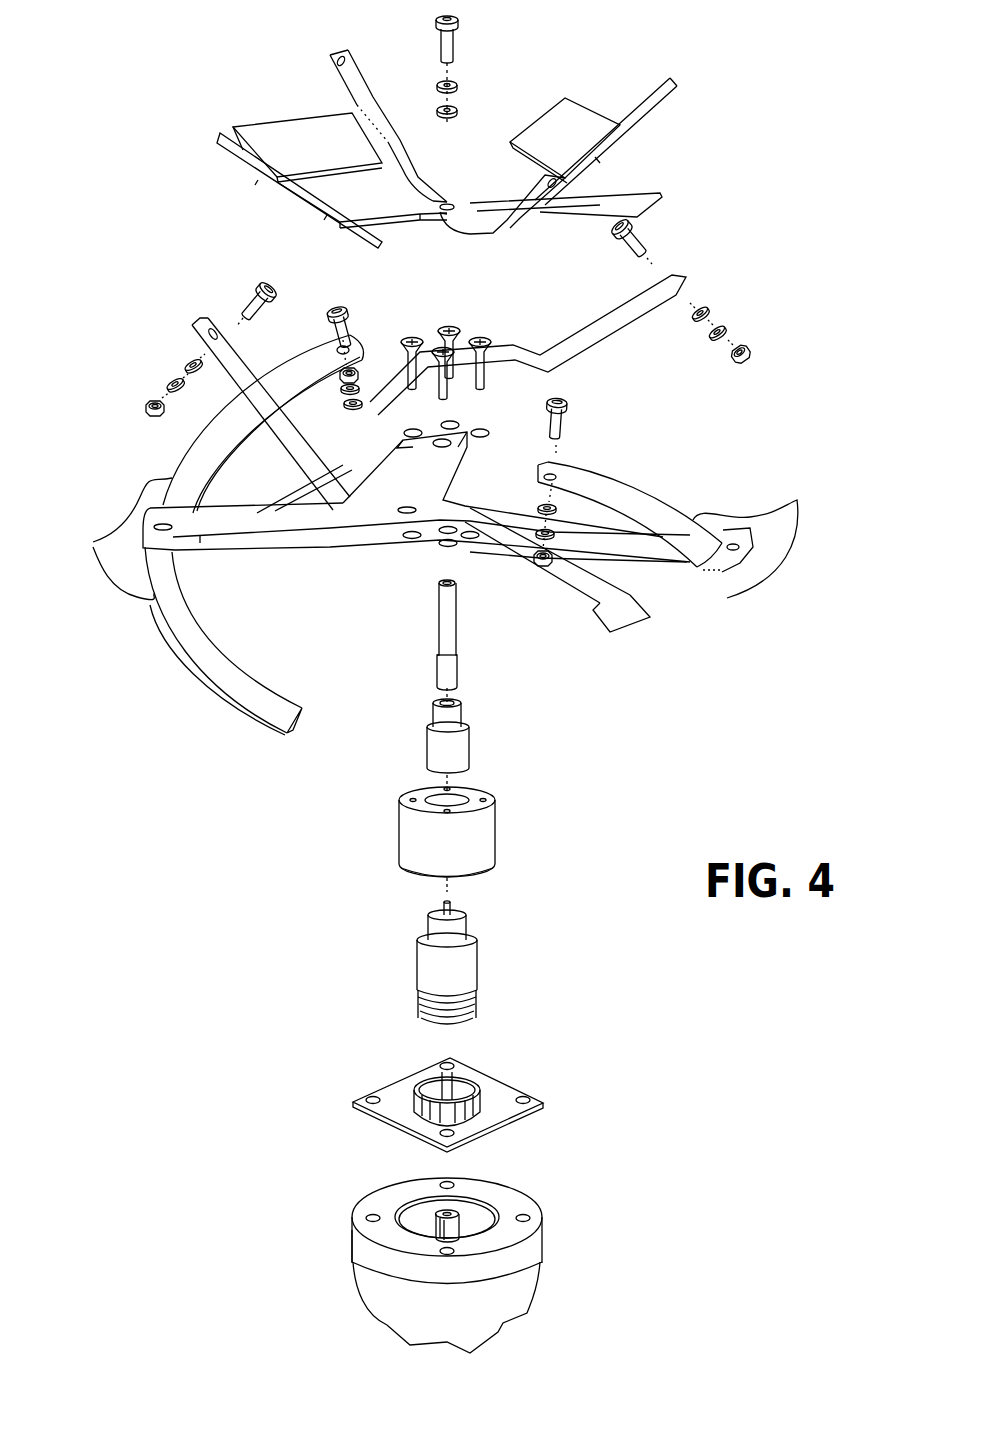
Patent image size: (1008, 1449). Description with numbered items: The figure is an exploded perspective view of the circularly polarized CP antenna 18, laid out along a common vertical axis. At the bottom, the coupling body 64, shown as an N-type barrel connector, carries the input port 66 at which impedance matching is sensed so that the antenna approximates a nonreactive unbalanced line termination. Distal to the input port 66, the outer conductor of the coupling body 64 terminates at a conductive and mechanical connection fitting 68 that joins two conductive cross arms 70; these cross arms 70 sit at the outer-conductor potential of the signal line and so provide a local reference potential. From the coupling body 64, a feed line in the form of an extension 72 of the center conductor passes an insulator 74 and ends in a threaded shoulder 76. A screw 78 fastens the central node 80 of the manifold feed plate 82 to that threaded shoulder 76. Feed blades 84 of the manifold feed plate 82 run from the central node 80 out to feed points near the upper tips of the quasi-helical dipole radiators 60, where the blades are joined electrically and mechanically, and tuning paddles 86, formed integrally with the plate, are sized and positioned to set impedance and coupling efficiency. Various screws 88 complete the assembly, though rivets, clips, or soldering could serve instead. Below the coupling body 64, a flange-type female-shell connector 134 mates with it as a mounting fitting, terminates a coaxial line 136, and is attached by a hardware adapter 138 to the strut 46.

The CP antenna 18 is at (218, 797).
The strut 46 is at (545, 1277).
The quasi-helical dipole radiators 60 is at (93, 544).
The coupling body 64 is at (417, 968).
The input port 66 is at (452, 1033).
The connection fitting 68 is at (399, 840).
The cross arms 70 is at (439, 492).
The extension 72 is at (437, 630).
The insulator 74 is at (427, 752).
The threaded shoulder 76 is at (455, 583).
The screw 78 is at (453, 40).
The central node 80 is at (463, 197).
The manifold feed plate 82 is at (745, 114).
The feed blades 84 is at (417, 167).
The tuning paddles 86 is at (322, 157).
The screws 88 is at (472, 330).
The flange-type female-shell connector 134 is at (370, 1122).
The coaxial line 136 is at (455, 1212).
The hardware adapter 138 is at (353, 1238).